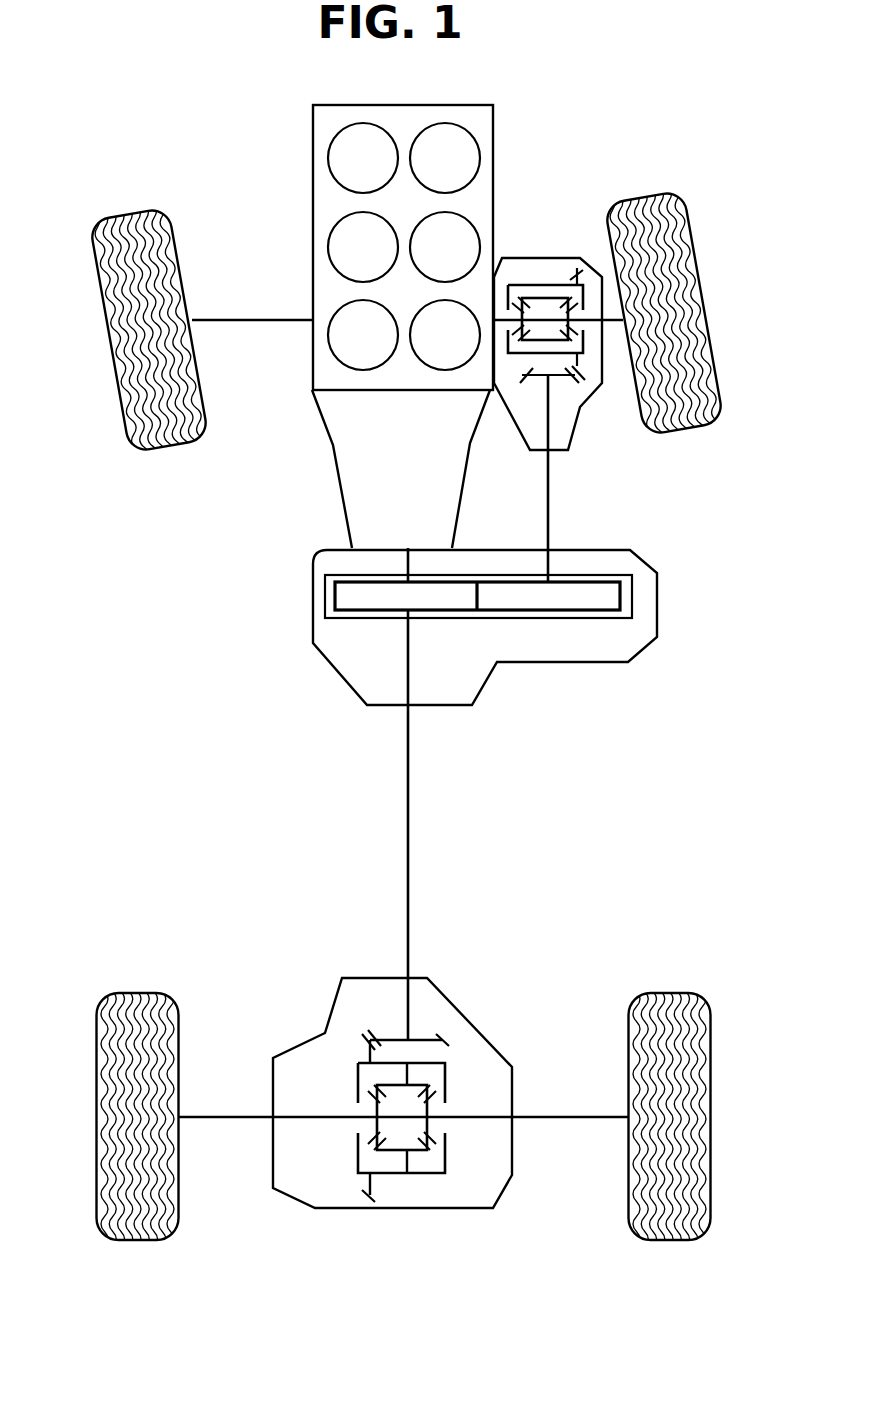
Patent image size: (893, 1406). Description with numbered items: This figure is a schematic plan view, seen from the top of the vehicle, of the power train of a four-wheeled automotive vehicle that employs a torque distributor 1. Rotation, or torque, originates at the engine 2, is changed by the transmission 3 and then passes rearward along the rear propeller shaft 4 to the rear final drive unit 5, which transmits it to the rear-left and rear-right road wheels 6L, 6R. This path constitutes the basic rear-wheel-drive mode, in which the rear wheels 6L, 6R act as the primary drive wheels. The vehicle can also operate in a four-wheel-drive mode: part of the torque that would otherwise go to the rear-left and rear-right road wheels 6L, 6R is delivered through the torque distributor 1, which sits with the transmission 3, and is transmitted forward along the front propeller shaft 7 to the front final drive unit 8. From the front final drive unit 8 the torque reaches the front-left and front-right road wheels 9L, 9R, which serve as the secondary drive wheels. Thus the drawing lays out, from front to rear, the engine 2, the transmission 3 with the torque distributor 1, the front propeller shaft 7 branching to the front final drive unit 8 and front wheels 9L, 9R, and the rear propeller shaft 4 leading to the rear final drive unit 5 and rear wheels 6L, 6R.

The torque distributor 1 is at (658, 596).
The engine 2 is at (311, 184).
The transmission 3 is at (332, 448).
The rear propeller shaft 4 is at (410, 803).
The rear final drive unit 5 is at (476, 1037).
The rear-left road wheel 6L is at (113, 1241).
The rear-right road wheel 6R is at (684, 1241).
The front propeller shaft 7 is at (549, 518).
The front final drive unit 8 is at (553, 256).
The front-left road wheel 9L is at (126, 210).
The front-right road wheel 9R is at (678, 192).